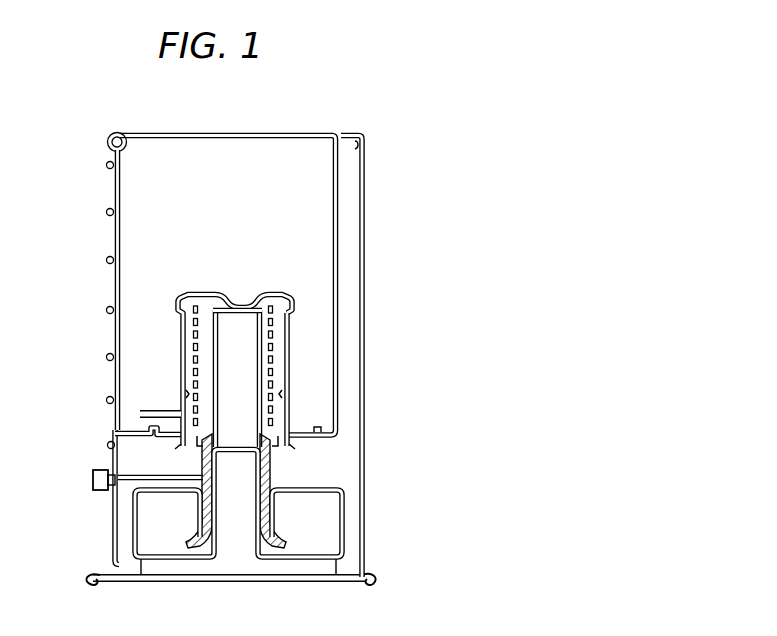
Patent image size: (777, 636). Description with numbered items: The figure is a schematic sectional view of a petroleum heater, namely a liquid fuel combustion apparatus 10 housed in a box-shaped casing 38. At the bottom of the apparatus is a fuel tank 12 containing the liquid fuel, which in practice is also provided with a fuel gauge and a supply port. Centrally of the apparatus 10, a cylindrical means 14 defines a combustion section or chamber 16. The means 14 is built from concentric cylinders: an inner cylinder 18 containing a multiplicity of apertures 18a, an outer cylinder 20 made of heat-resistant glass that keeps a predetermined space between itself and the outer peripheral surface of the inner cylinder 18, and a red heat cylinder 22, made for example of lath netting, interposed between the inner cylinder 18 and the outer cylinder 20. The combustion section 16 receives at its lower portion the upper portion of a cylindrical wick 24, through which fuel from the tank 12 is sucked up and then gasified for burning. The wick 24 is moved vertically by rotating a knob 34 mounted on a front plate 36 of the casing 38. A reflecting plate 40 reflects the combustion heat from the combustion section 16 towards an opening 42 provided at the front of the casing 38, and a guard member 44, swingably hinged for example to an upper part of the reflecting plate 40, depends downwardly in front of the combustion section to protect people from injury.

The liquid fuel combustion apparatus 10 is at (389, 238).
The fuel tank 12 is at (322, 526).
The means defining a combustion section 14 is at (170, 326).
The combustion section 16 is at (207, 326).
The inner cylinder 18 is at (212, 380).
The apertures 18a is at (216, 364).
The outer cylinder 20 is at (287, 337).
The red heat cylinder 22 is at (274, 370).
The wick 24 is at (268, 503).
The knob 34 is at (93, 478).
The front plate 36 is at (112, 532).
The casing 38 is at (363, 178).
The reflecting plate 40 is at (333, 174).
The opening 42 is at (120, 292).
The guard member 44 is at (116, 356).